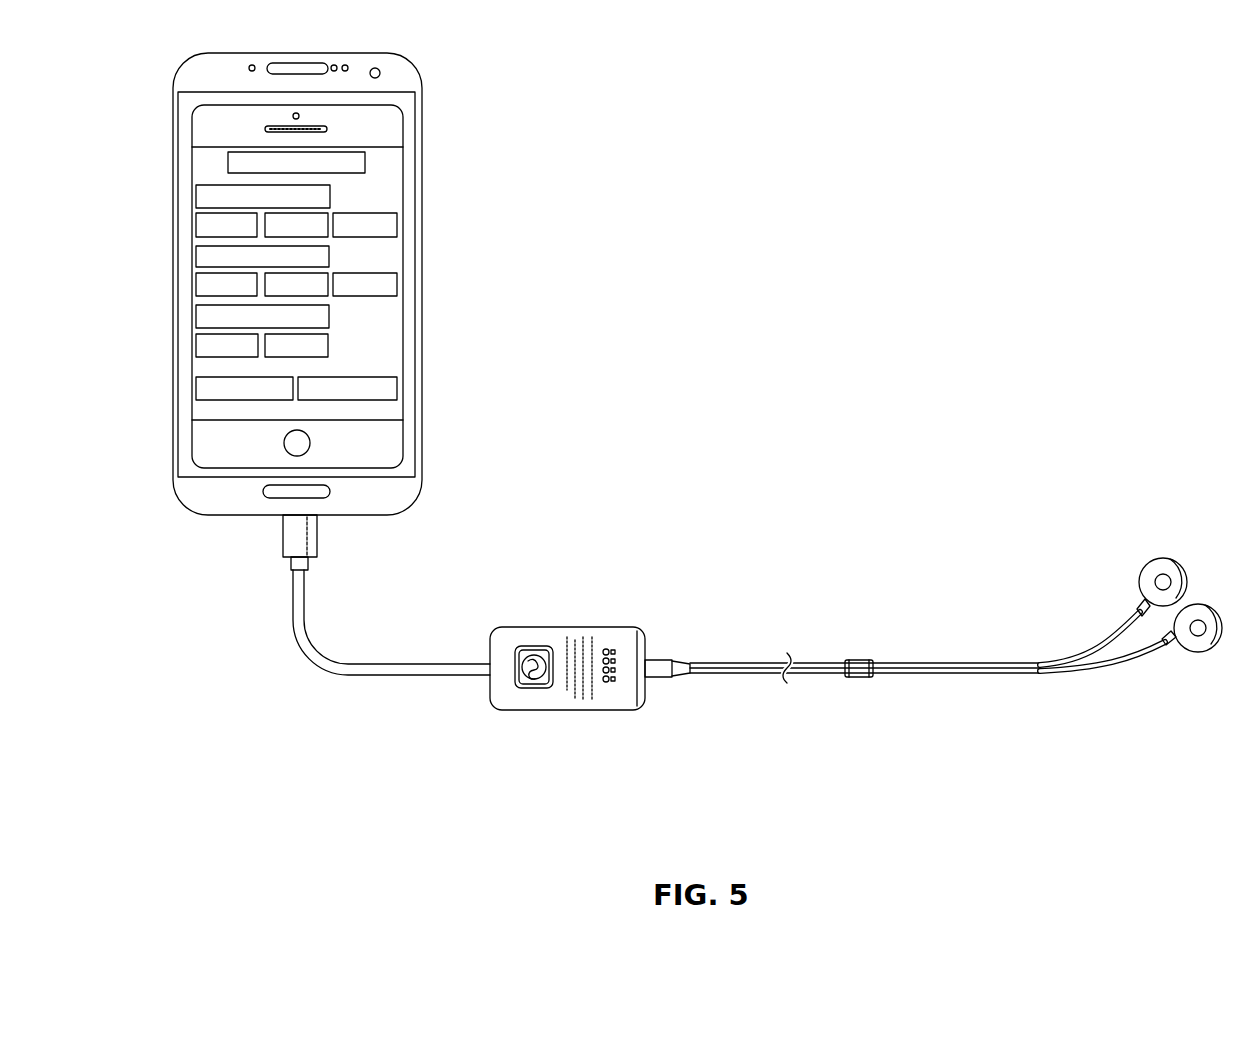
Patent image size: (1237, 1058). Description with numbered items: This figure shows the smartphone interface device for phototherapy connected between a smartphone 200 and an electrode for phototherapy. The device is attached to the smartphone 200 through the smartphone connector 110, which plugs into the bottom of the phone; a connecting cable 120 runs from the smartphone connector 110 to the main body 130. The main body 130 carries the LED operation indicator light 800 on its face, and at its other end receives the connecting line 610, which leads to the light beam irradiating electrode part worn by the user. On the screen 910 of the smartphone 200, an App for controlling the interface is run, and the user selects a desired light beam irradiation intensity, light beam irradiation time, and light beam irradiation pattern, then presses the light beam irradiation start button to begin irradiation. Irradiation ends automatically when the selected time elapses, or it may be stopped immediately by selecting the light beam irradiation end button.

The smartphone 200 is at (422, 107).
The screen 910 is at (402, 172).
The smartphone connector 110 is at (288, 537).
The connecting cable 120 is at (309, 652).
The main body 130 is at (612, 638).
The LED operation indicator light 800 is at (532, 687).
The connecting line 610 is at (707, 673).